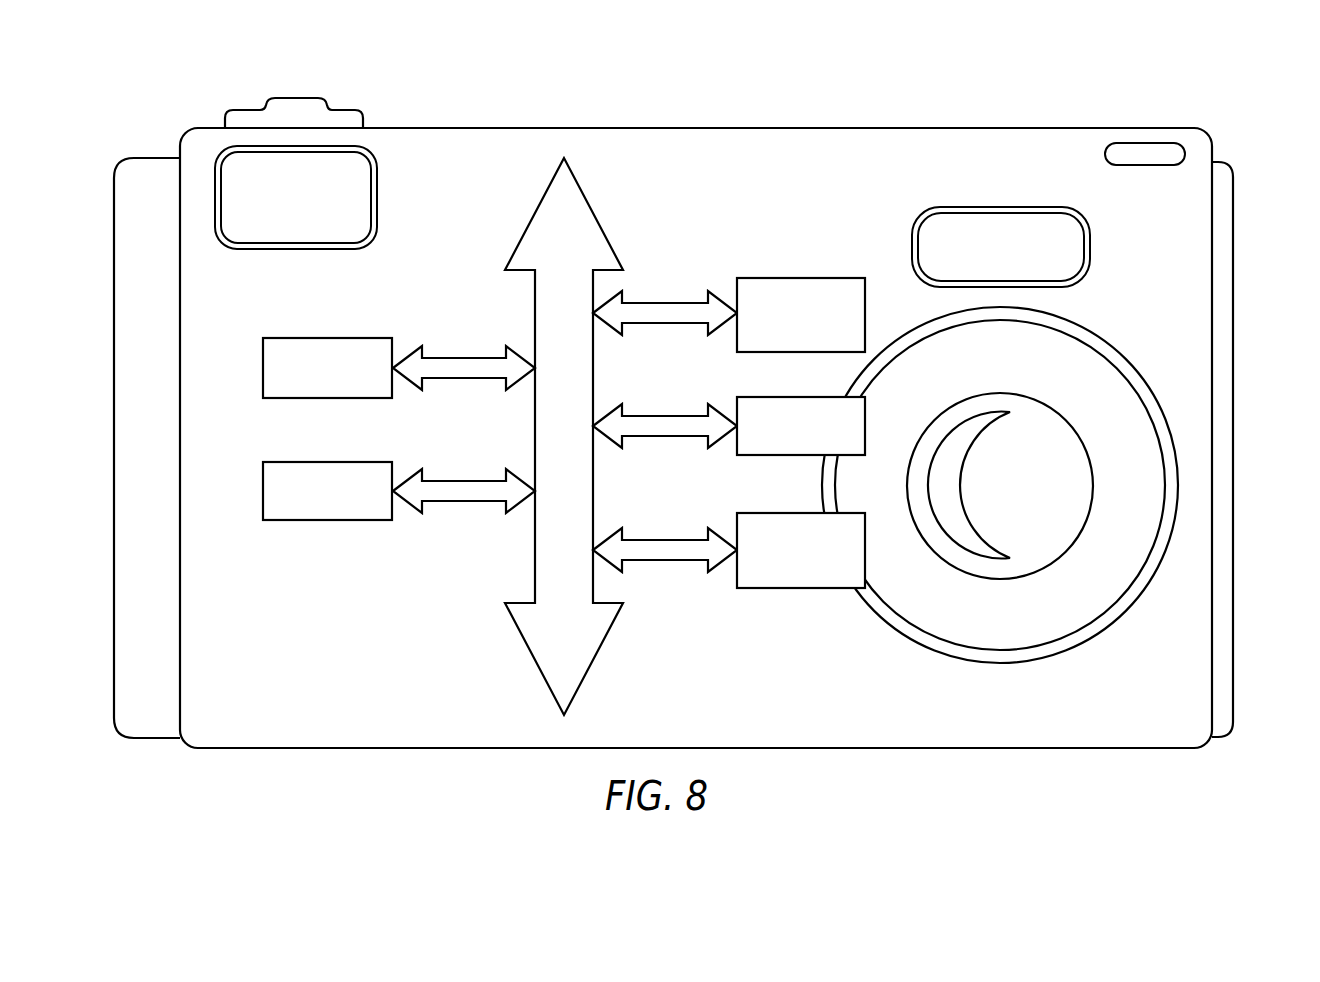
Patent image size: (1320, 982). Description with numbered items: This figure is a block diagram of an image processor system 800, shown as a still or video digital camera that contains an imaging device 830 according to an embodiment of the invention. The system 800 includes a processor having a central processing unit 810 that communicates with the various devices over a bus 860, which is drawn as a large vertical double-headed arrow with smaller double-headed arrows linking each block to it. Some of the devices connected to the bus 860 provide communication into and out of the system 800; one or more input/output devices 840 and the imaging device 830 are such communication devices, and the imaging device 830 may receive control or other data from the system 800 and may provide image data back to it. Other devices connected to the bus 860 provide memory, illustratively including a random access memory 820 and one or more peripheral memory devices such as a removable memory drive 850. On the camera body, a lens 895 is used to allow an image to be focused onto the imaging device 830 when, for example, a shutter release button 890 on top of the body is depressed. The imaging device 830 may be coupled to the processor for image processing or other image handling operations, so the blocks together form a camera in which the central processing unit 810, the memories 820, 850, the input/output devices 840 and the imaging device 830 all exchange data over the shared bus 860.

The image processor system 800 is at (1031, 96).
The central processing unit 810 is at (263, 368).
The random access memory 820 is at (263, 491).
The imaging device 830 is at (865, 300).
The input/output device 840 is at (865, 406).
The removable memory drive 850 is at (865, 555).
The bus 860 is at (533, 660).
The shutter release button 890 is at (295, 104).
The lens 895 is at (1047, 488).